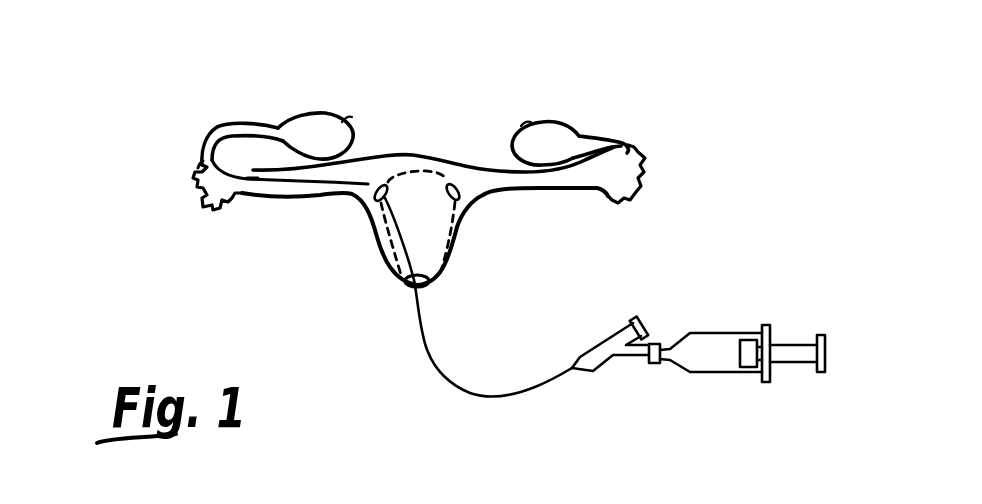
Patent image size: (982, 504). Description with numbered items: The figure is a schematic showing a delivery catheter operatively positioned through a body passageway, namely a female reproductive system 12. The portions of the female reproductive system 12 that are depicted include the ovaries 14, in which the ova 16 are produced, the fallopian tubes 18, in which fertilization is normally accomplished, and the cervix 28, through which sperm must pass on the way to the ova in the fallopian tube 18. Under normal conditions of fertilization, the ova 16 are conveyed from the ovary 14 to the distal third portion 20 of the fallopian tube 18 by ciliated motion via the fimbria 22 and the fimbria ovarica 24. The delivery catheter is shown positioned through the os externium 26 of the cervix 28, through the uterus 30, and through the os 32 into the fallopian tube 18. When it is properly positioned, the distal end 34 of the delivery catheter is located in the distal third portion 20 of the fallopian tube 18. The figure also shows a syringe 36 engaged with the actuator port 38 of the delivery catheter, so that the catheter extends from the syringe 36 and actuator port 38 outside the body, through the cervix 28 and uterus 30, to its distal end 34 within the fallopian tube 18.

The female reproductive system 12 is at (464, 24).
The ovaries 14 is at (322, 113).
The ova 16 is at (347, 120).
The fallopian tubes 18 is at (280, 197).
The distal third portion 20 is at (245, 201).
The fimbria 22 is at (194, 185).
The fimbria ovarica 24 is at (198, 168).
The os externium 26 is at (429, 284).
The cervix 28 is at (381, 278).
The uterus 30 is at (468, 219).
The os 32 is at (218, 127).
The distal end 34 is at (253, 178).
The syringe 36 is at (707, 373).
The actuator port 38 is at (600, 362).